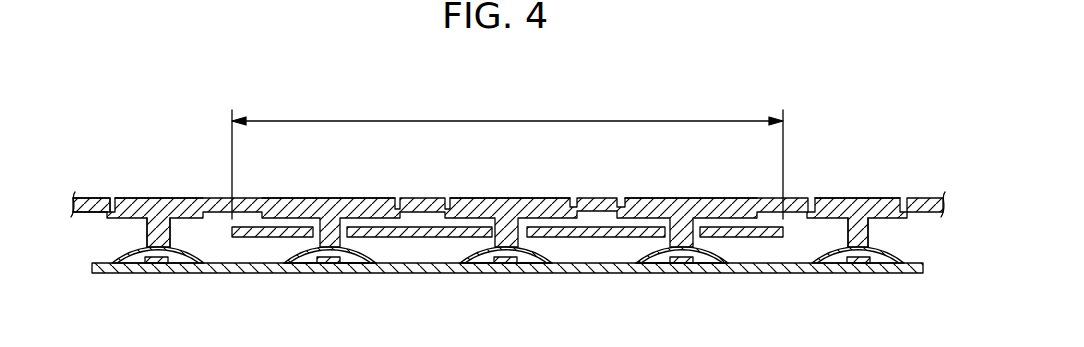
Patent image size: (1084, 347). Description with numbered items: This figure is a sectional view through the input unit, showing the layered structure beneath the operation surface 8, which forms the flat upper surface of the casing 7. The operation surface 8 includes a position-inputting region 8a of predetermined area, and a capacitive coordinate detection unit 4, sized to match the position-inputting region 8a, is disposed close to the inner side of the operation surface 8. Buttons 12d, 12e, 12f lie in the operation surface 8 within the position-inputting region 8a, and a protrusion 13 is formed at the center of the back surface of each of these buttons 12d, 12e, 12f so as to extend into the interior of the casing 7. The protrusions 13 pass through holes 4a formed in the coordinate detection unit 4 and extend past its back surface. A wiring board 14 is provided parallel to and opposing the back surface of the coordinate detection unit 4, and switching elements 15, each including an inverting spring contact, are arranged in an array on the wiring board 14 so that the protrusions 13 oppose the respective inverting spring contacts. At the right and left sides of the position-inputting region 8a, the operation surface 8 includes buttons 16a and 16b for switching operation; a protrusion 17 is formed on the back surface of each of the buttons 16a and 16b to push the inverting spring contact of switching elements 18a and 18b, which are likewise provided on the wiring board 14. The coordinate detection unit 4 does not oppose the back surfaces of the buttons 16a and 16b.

The coordinate detection unit 4 is at (753, 238).
The holes 4a is at (302, 266).
The casing 7 is at (96, 197).
The operation surface 8 is at (423, 189).
The position-inputting region 8a is at (538, 120).
The button 12d is at (344, 197).
The button 12e is at (521, 197).
The button 12f is at (694, 197).
The protrusion 13 is at (324, 250).
The wiring board 14 is at (203, 273).
The switching elements 15 is at (336, 252).
The button 16a is at (872, 197).
The button 16b is at (165, 197).
The protrusion 17 is at (147, 232).
The switching element 18a is at (886, 273).
The switching element 18b is at (137, 256).